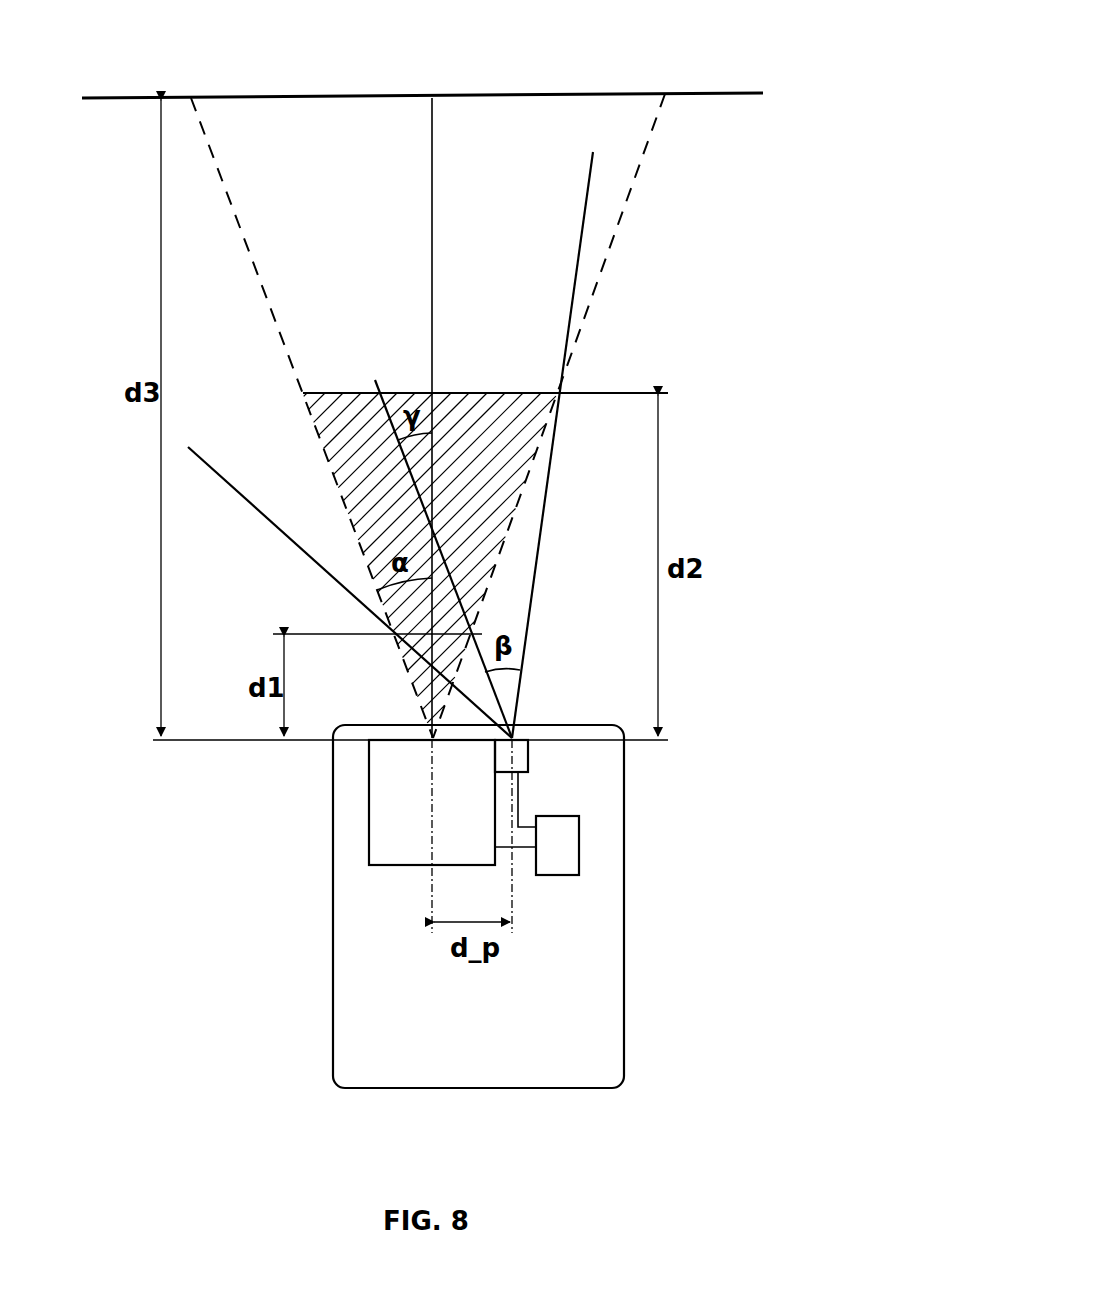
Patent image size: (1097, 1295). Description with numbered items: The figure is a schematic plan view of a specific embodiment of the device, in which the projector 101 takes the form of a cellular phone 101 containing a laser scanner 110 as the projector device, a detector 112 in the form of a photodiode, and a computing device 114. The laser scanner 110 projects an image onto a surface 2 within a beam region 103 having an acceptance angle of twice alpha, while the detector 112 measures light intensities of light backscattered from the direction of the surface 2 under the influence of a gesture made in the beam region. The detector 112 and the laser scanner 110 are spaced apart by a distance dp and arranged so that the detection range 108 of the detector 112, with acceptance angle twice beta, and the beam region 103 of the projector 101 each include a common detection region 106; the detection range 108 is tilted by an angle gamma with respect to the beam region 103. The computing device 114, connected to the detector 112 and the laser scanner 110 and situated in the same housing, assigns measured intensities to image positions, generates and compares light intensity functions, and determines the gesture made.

The surface 2 is at (713, 93).
The projector 101 is at (357, 940).
The beam region 103 is at (205, 135).
The detection region 106 is at (490, 400).
The detection range 108 is at (580, 247).
The laser scanner 110 is at (382, 800).
The detector 112 is at (518, 760).
The computing device 114 is at (560, 868).